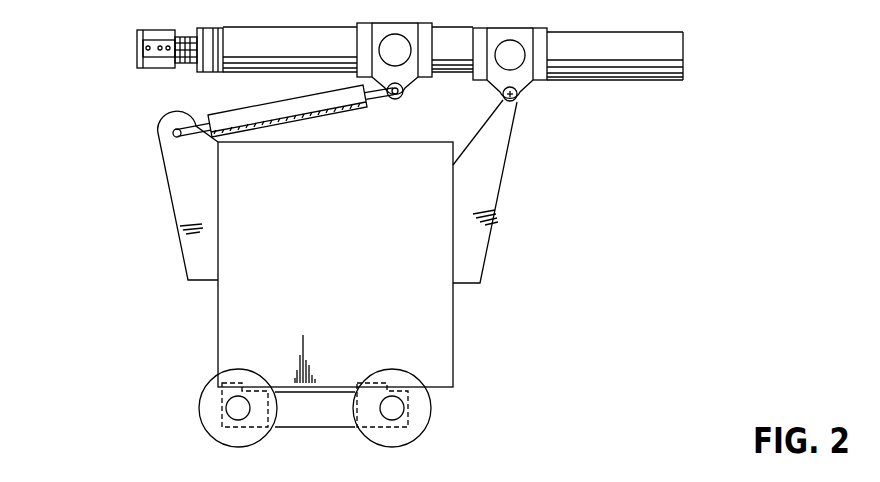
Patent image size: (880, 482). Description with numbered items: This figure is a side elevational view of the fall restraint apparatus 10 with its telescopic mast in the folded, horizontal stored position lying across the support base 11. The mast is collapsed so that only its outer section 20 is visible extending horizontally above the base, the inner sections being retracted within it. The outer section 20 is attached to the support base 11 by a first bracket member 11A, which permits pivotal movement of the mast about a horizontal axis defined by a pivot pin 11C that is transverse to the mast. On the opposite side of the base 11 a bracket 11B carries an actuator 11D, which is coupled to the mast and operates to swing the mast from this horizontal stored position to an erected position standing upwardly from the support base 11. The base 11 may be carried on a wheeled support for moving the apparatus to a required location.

The fall restraint apparatus 10 is at (571, 110).
The outer section 20 is at (637, 80).
The support base 11 is at (453, 365).
The first bracket member 11A is at (493, 237).
The bracket 11B is at (165, 187).
The pivot pin 11C is at (521, 103).
The actuator 11D is at (207, 113).